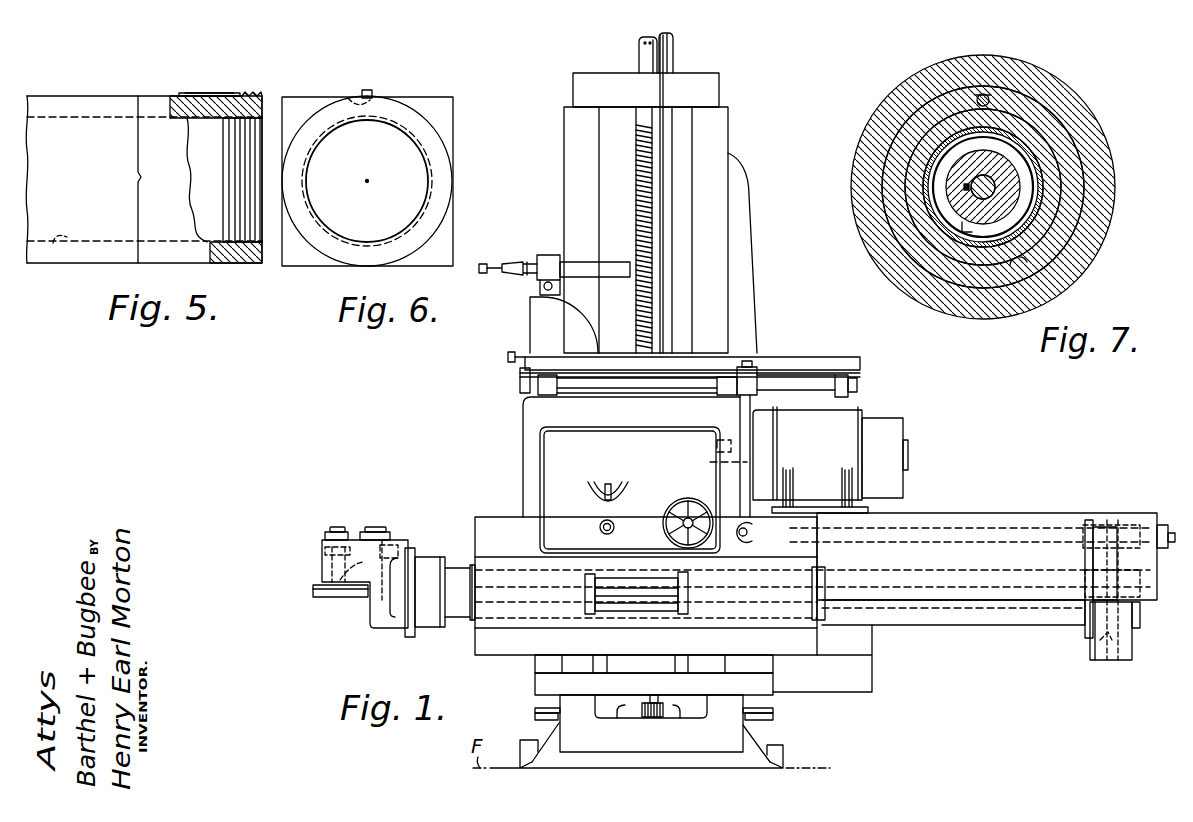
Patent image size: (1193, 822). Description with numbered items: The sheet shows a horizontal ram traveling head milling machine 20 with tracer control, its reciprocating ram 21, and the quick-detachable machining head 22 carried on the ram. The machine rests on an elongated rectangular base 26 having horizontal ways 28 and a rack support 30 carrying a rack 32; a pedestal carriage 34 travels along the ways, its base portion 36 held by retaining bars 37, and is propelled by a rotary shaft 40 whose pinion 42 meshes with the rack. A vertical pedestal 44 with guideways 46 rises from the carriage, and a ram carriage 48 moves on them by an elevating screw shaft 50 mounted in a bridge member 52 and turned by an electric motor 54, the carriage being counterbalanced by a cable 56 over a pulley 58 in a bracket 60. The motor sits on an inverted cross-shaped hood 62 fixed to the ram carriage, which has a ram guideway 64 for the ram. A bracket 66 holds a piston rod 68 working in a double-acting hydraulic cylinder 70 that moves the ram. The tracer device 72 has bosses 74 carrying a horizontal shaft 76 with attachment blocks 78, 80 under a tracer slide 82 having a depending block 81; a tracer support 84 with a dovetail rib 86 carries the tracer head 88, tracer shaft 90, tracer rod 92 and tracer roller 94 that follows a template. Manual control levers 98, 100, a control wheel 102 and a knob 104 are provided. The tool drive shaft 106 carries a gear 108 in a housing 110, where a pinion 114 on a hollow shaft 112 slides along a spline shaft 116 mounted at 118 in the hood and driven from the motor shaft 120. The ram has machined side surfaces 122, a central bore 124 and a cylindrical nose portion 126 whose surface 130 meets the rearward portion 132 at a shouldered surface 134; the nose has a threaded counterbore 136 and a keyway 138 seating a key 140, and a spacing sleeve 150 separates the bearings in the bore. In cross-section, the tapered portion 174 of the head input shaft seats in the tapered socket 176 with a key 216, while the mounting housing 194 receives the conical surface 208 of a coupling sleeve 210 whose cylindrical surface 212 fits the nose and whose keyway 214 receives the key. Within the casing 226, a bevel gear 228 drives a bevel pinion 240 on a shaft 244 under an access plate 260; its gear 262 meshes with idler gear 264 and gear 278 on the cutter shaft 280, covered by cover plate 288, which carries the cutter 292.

In FIG. 1, the milling machine 20 is at (767, 348).
In FIG. 1, the ram 21 is at (937, 626).
In FIG. 5, the ram 21 is at (108, 93).
In FIG. 6, the ram 21 is at (288, 94).
In FIG. 7, the ram 21 is at (920, 205).
In FIG. 1, the machining head 22 is at (403, 537).
In FIG. 1, the base 26 is at (782, 757).
In FIG. 1, the horizontal ways 28 is at (548, 706).
In FIG. 1, the rack support 30 is at (621, 719).
In FIG. 1, the rack 32 is at (645, 719).
In FIG. 1, the pedestal carriage 34 is at (534, 664).
In FIG. 1, the base portion 36 is at (535, 684).
In FIG. 1, the retaining bars 37 is at (540, 714).
In FIG. 1, the rotary shaft 40 is at (660, 702).
In FIG. 1, the pinion 42 is at (668, 720).
In FIG. 1, the pedestal 44 is at (749, 180).
In FIG. 1, the vertical guideways 46 is at (572, 135).
In FIG. 1, the ram carriage 48 is at (521, 433).
In FIG. 1, the elevating screw shaft 50 is at (637, 218).
In FIG. 1, the bridge member 52 is at (604, 82).
In FIG. 1, the electric motor 54 is at (882, 421).
In FIG. 1, the cable 56 is at (664, 170).
In FIG. 1, the pulley 58 is at (662, 36).
In FIG. 1, the bracket 60 is at (640, 44).
In FIG. 1, the hood or cover 62 is at (937, 513).
In FIG. 1, the ram guideway 64 is at (503, 553).
In FIG. 1, the bracket 66 is at (585, 596).
In FIG. 1, the piston rod 68 is at (620, 600).
In FIG. 1, the hydraulic cylinder 70 is at (646, 604).
In FIG. 1, the tracer device 72 is at (523, 345).
In FIG. 1, the ears or bosses 74 is at (548, 390).
In FIG. 1, the horizontal shaft 76 is at (633, 388).
In FIG. 1, the attachment block 78 is at (745, 361).
In FIG. 1, the attachment block 80 is at (845, 375).
In FIG. 1, the depending block 81 is at (520, 382).
In FIG. 1, the tracer slide 82 is at (617, 357).
In FIG. 1, the tracer support 84 is at (530, 315).
In FIG. 1, the dovetail rib 86 is at (540, 292).
In FIG. 1, the tracer head 88 is at (552, 255).
In FIG. 1, the tracer shaft 90 is at (577, 263).
In FIG. 1, the tracer rod 92 is at (512, 262).
In FIG. 1, the tracer roller 94 is at (482, 264).
In FIG. 1, the manual control lever 98 is at (608, 483).
In FIG. 1, the manual control lever 100 is at (748, 537).
In FIG. 1, the manual control wheel 102 is at (693, 497).
In FIG. 1, the manual control knob 104 is at (600, 527).
In FIG. 1, the tool drive shaft 106 is at (460, 614).
In FIG. 1, the gear 108 is at (1108, 650).
In FIG. 7, the gear 108 is at (968, 226).
In FIG. 1, the housing 110 is at (1090, 652).
In FIG. 1, the hollow shaft 112 is at (1127, 519).
In FIG. 1, the pinion 114 is at (1120, 520).
In FIG. 1, the spline shaft 116 is at (1017, 527).
In FIG. 1, the spline shaft mounting 118 is at (1157, 525).
In FIG. 1, the motor shaft 120 is at (715, 445).
In FIG. 5, the machined side surfaces 122 is at (90, 93).
In FIG. 6, the machined side surfaces 122 is at (397, 95).
In FIG. 5, the bore 124 is at (64, 247).
In FIG. 7, the bore 124 is at (928, 222).
In FIG. 5, the nose portion 126 is at (225, 258).
In FIG. 6, the nose portion 126 is at (318, 110).
In FIG. 7, the nose portion 126 is at (915, 168).
In FIG. 5, the cylindrical outer surface 130 is at (156, 95).
In FIG. 6, the cylindrical outer surface 130 is at (428, 118).
In FIG. 7, the cylindrical outer surface 130 is at (903, 148).
In FIG. 5, the rearward portion 132 is at (70, 92).
In FIG. 5, the shouldered surface 134 is at (140, 212).
In FIG. 6, the shouldered surface 134 is at (431, 254).
In FIG. 5, the threaded counterbore 136 is at (246, 264).
In FIG. 6, the threaded counterbore 136 is at (314, 163).
In FIG. 5, the keyway 138 is at (200, 93).
In FIG. 6, the keyway 138 is at (350, 98).
In FIG. 7, the keyway 138 is at (900, 88).
In FIG. 5, the key 140 is at (222, 93).
In FIG. 6, the key 140 is at (367, 90).
In FIG. 7, the key 140 is at (981, 94).
In FIG. 7, the spacing sleeve 150 is at (962, 130).
In FIG. 7, the tapered reduced diameter portion 174 is at (1013, 168).
In FIG. 7, the tapered socket 176 is at (1060, 140).
In FIG. 1, the mounting housing 194 is at (432, 556).
In FIG. 7, the mounting housing 194 is at (962, 318).
In FIG. 7, the external conical surface 208 is at (912, 250).
In FIG. 1, the coupling sleeve 210 is at (426, 628).
In FIG. 7, the coupling sleeve 210 is at (930, 265).
In FIG. 7, the internal cylindrical surface 212 is at (1040, 266).
In FIG. 7, the keyway 214 is at (990, 96).
In FIG. 7, the key 216 is at (943, 187).
In FIG. 1, the casing 226 is at (367, 621).
In FIG. 1, the bevel gear 228 is at (388, 620).
In FIG. 1, the bevel pinion 240 is at (360, 563).
In FIG. 1, the shaft 244 is at (410, 545).
In FIG. 1, the access plate 260 is at (335, 526).
In FIG. 1, the gear 262 is at (394, 542).
In FIG. 1, the gear 264 is at (347, 550).
In FIG. 1, the gear 278 is at (325, 548).
In FIG. 1, the cutter shaft 280 is at (337, 556).
In FIG. 1, the cover plate 288 is at (378, 526).
In FIG. 1, the cutter 292 is at (320, 597).